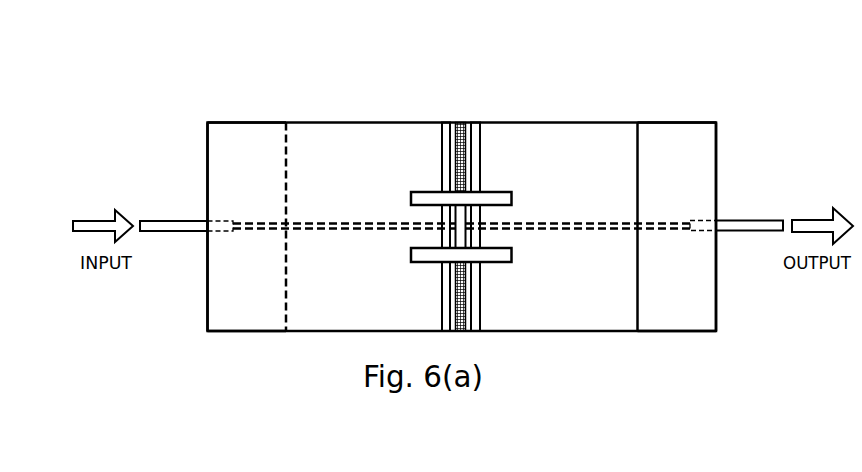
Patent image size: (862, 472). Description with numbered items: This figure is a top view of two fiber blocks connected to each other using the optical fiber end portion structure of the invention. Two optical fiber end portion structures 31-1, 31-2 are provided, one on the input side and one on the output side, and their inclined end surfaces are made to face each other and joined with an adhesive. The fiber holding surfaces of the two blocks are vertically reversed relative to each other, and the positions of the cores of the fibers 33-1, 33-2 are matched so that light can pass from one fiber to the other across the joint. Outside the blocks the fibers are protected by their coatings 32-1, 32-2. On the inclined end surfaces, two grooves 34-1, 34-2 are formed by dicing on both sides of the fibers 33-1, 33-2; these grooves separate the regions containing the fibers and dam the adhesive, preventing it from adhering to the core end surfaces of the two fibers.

The optical fiber end portion structure 31-1 is at (231, 92).
The optical fiber end portion structure 31-2 is at (656, 92).
The coating 32-1 is at (177, 218).
The coating 32-2 is at (757, 218).
The fiber 33-1 is at (343, 221).
The fiber 33-2 is at (577, 221).
The groove 34-1 is at (427, 196).
The groove 34-2 is at (498, 196).